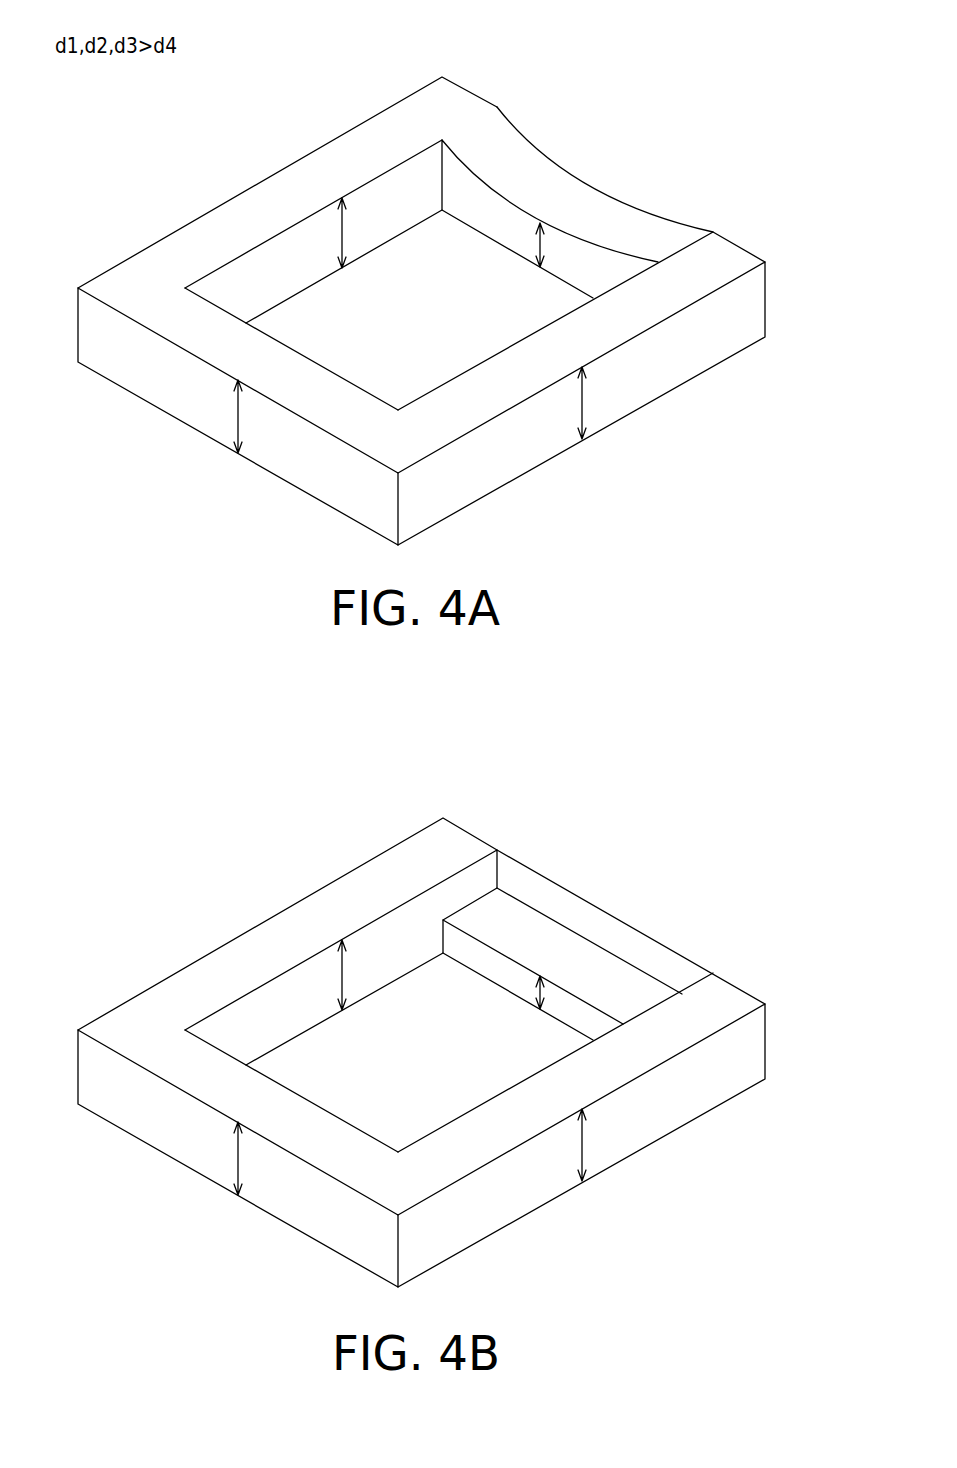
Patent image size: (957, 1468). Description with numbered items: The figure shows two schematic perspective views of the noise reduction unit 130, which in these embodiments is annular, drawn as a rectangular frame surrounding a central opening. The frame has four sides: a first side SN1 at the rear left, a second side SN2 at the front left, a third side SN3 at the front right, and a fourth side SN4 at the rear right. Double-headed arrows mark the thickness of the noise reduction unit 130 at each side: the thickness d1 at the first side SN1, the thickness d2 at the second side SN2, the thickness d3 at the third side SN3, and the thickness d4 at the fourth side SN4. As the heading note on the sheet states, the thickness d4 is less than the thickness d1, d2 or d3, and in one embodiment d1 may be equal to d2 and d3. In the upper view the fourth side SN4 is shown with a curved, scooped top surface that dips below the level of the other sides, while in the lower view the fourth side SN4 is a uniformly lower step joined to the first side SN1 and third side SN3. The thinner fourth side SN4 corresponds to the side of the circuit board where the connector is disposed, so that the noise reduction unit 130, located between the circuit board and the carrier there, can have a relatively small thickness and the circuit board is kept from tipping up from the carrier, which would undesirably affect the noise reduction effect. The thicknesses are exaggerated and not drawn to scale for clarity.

In FIG. 4A, the noise reduction unit 130 is at (421, 306).
In FIG. 4B, the noise reduction unit 130 is at (421, 1048).
In FIG. 4A, the first side SN1 is at (332, 167).
In FIG. 4B, the first side SN1 is at (330, 908).
In FIG. 4A, the second side SN2 is at (175, 395).
In FIG. 4B, the second side SN2 is at (175, 1137).
In FIG. 4A, the third side SN3 is at (527, 452).
In FIG. 4B, the third side SN3 is at (527, 1194).
In FIG. 4A, the fourth side SN4 is at (542, 170).
In FIG. 4B, the fourth side SN4 is at (532, 928).
In FIG. 4A, the thickness of the noise reduction unit at the first side d1 is at (340, 233).
In FIG. 4B, the thickness of the noise reduction unit at the first side d1 is at (338, 975).
In FIG. 4A, the thickness of the noise reduction unit at the second side d2 is at (238, 418).
In FIG. 4B, the thickness of the noise reduction unit at the second side d2 is at (238, 1160).
In FIG. 4A, the thickness of the noise reduction unit at the third side d3 is at (582, 402).
In FIG. 4B, the thickness of the noise reduction unit at the third side d3 is at (582, 1144).
In FIG. 4A, the thickness of the noise reduction unit at the fourth side d4 is at (540, 247).
In FIG. 4B, the thickness of the noise reduction unit at the fourth side d4 is at (542, 1000).